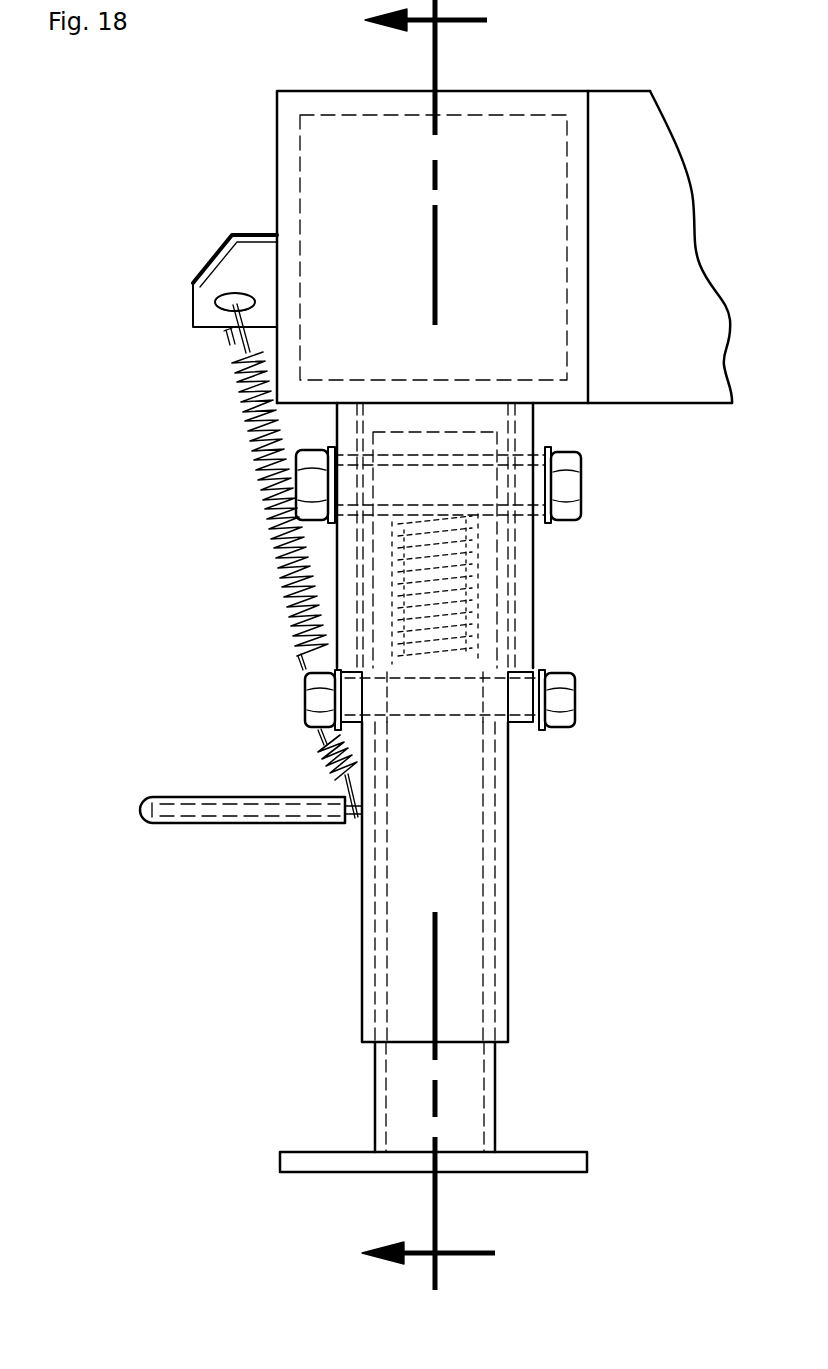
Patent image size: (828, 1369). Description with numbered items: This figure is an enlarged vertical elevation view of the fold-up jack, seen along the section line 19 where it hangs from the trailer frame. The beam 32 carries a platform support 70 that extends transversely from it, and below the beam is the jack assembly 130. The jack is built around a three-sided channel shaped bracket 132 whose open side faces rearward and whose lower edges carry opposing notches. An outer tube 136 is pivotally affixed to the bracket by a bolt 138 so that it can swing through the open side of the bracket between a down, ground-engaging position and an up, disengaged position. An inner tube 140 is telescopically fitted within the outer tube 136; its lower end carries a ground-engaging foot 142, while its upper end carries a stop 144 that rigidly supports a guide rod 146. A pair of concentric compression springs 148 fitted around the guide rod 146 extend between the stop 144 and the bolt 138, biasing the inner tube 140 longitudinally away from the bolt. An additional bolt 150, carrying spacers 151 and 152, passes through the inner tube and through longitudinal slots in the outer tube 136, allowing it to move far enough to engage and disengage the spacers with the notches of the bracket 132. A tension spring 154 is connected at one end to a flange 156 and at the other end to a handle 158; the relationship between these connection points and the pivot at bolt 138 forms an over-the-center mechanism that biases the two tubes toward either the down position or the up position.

The section line 19- 19 is at (453, 637).
The beam 32 is at (548, 95).
The platform support 70 is at (658, 342).
The jack stand assembly 130 is at (178, 568).
The bracket 132 is at (537, 553).
The outer tube 136 is at (510, 905).
The bolt 138 is at (567, 490).
The inner tube 140 is at (495, 1060).
The ground-engaging foot 142 is at (537, 1150).
The stop 144 is at (490, 661).
The guide rod 146 is at (456, 583).
The concentric compression springs 148 is at (467, 523).
The bolt 150 is at (555, 700).
The spacer 151 is at (525, 720).
The spacer 152 is at (322, 740).
The tension spring 154 is at (222, 378).
The flange 156 is at (220, 250).
The handle 158 is at (168, 797).